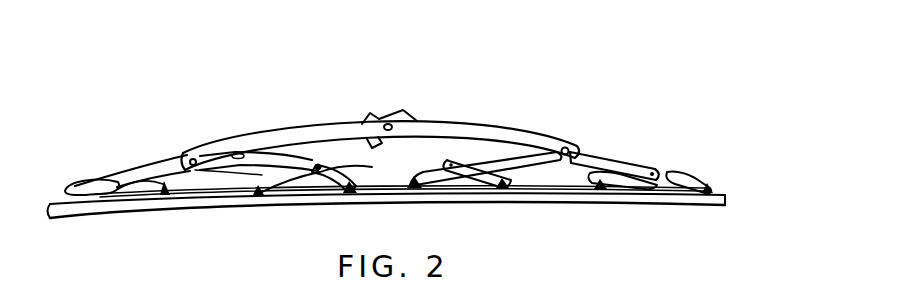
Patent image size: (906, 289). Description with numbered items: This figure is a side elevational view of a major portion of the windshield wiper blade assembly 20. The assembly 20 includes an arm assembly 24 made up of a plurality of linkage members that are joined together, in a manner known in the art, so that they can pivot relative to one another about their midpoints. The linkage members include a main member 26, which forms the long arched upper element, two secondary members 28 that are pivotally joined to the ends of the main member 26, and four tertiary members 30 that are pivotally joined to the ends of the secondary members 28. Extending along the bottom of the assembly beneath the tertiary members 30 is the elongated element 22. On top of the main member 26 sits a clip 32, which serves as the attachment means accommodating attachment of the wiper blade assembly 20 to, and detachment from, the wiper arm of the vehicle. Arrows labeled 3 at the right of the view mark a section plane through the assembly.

The windshield wiper blade assembly 20 is at (507, 128).
The wiping element (rubber strip) 22 is at (232, 208).
The arm assembly 24 is at (455, 122).
The main member 26 is at (292, 134).
The secondary members 28 is at (155, 165).
The tertiary members 30 is at (90, 183).
The clip 32 is at (372, 115).
The section line of FIG. 3 is at (682, 90).